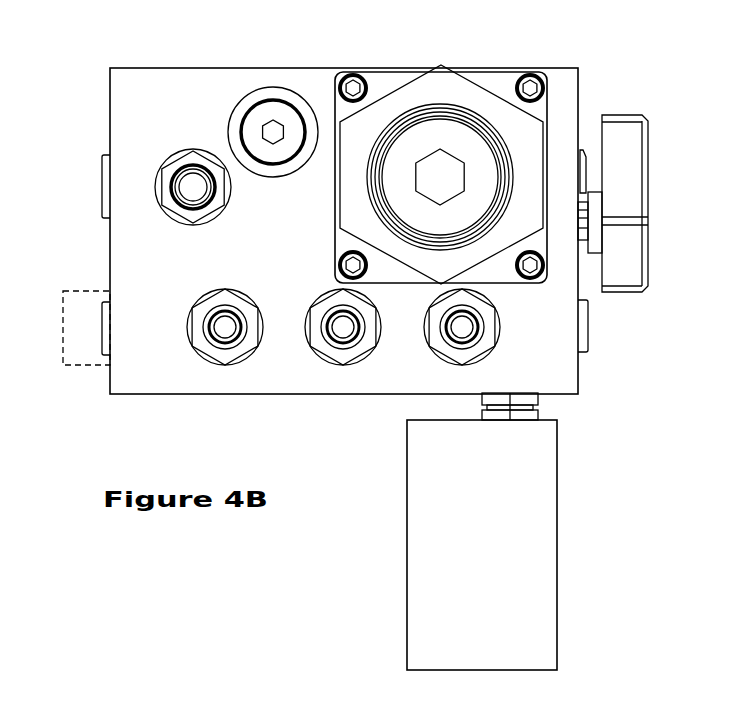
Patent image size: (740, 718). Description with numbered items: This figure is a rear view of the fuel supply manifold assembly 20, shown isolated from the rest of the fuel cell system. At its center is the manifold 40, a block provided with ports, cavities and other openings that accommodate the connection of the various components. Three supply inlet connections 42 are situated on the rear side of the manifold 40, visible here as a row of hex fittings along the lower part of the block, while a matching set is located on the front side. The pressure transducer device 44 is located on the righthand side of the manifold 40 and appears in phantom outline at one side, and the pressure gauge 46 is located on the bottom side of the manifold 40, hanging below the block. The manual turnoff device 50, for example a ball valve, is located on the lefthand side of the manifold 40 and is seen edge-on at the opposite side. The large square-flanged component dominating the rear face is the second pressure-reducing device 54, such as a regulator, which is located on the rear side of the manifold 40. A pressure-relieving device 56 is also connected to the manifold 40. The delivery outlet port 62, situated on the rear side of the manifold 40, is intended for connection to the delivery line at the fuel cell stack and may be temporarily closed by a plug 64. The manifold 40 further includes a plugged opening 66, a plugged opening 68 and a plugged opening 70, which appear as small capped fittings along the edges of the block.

The fuel supply manifold assembly 20 is at (524, 50).
The manifold 40 is at (191, 110).
The supply inlet connections 42 is at (229, 344).
The pressure transducer device 44 is at (62, 313).
The pressure gauge 46 is at (512, 540).
The manual turnoff device 50 is at (614, 183).
The second pressure-reducing device 54 is at (426, 92).
The pressure-relieving device 56 is at (206, 211).
The delivery outlet port 62 is at (277, 128).
The plug 64 is at (258, 103).
The plugged opening 66 is at (586, 158).
The plugged opening 68 is at (588, 327).
The plugged opening 70 is at (102, 191).